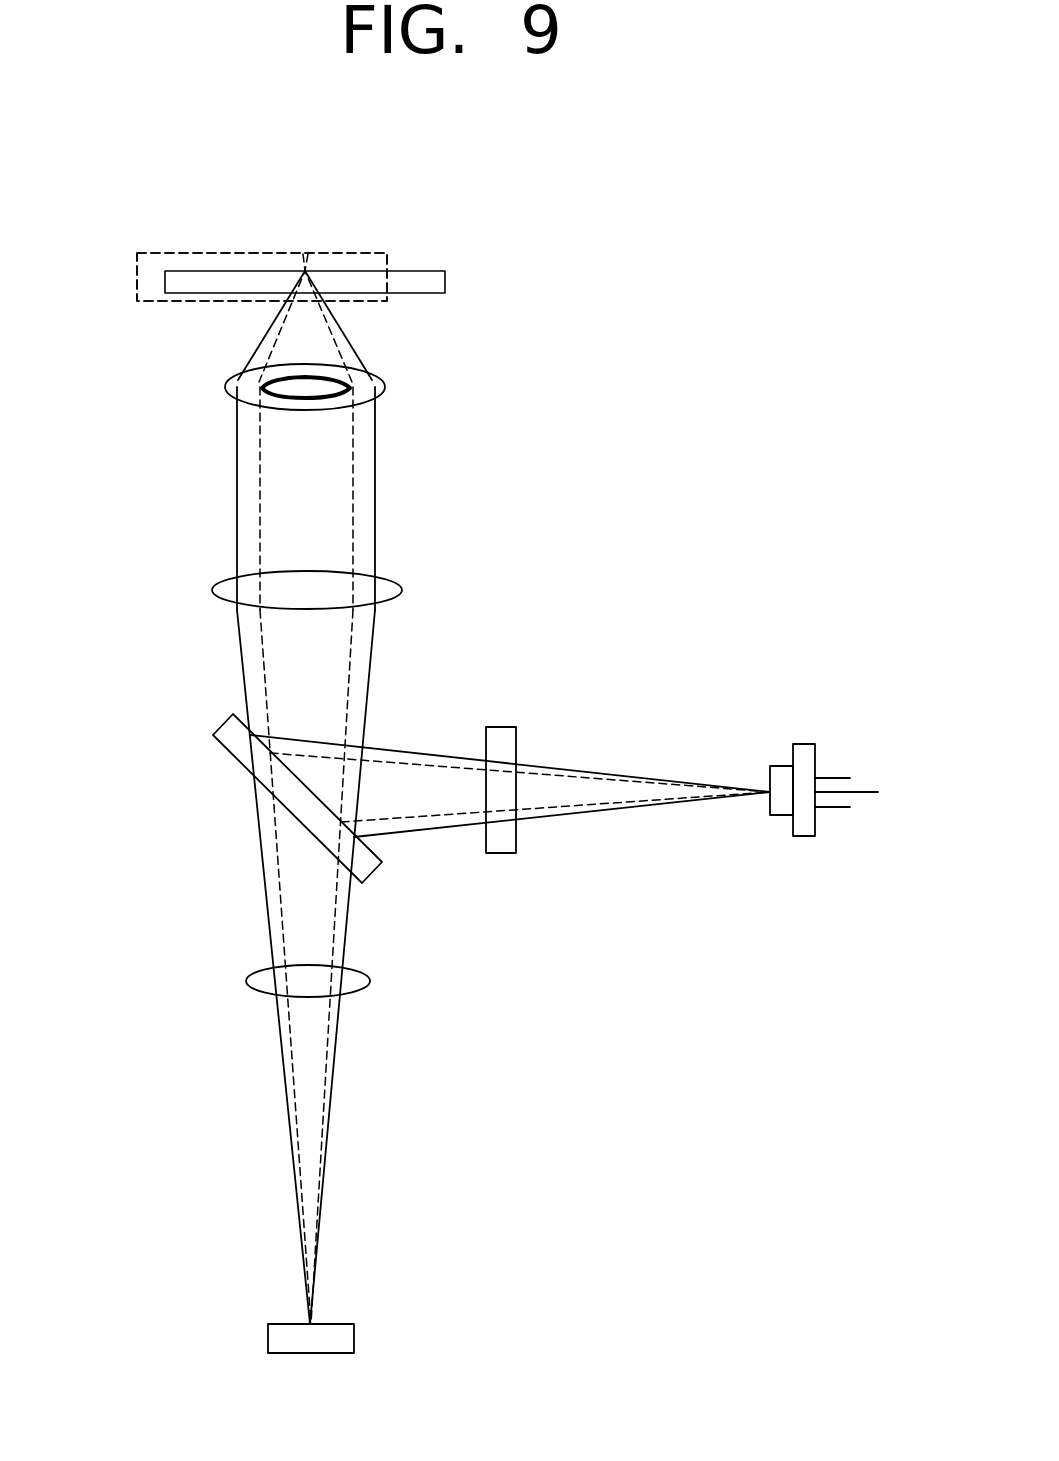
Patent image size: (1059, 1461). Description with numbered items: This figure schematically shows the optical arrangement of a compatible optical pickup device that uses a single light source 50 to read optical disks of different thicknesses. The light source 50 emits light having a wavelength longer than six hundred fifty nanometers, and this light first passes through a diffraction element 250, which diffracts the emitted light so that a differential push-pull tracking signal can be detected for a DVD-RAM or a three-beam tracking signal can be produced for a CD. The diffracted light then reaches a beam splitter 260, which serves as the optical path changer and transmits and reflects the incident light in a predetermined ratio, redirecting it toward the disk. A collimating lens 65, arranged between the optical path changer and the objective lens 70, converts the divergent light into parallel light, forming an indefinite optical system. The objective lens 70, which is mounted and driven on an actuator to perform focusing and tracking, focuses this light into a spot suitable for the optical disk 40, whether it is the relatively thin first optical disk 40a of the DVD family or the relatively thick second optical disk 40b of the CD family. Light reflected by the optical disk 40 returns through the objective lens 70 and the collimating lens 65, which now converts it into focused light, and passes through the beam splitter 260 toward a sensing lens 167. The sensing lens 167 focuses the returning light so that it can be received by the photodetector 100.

The optical disk 40 is at (133, 242).
The first optical disk 40a is at (418, 287).
The second optical disk 40b is at (358, 252).
The objective lens 70 is at (205, 413).
The collimating lens 65 is at (393, 589).
The beam splitter 260 is at (220, 752).
The diffraction element 250 is at (507, 743).
The light source 50 is at (812, 748).
The sensing lens 167 is at (363, 985).
The photodetector 100 is at (268, 1324).